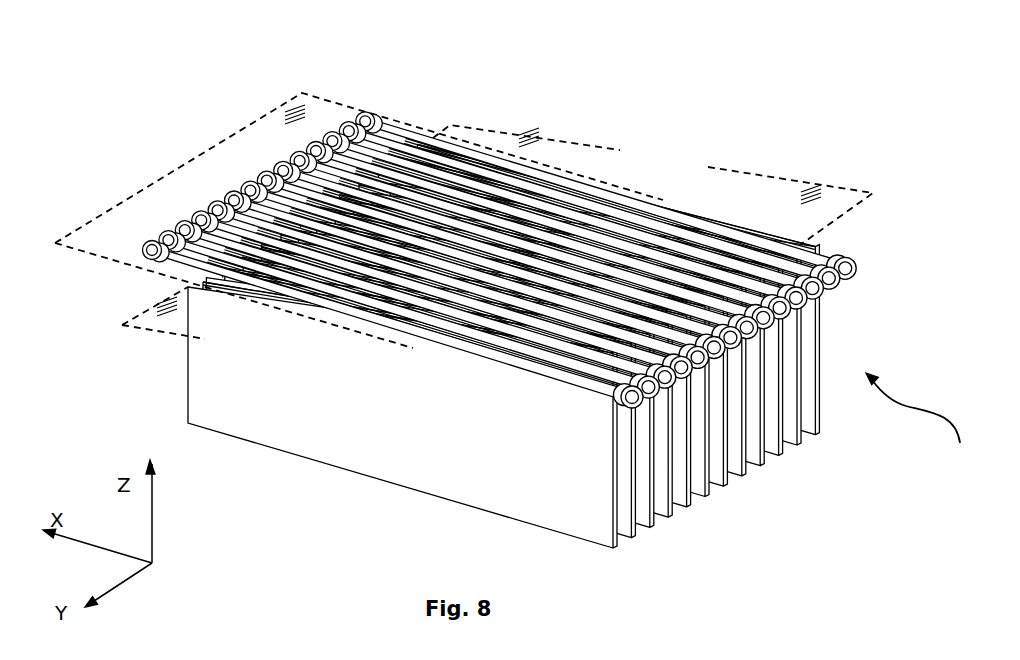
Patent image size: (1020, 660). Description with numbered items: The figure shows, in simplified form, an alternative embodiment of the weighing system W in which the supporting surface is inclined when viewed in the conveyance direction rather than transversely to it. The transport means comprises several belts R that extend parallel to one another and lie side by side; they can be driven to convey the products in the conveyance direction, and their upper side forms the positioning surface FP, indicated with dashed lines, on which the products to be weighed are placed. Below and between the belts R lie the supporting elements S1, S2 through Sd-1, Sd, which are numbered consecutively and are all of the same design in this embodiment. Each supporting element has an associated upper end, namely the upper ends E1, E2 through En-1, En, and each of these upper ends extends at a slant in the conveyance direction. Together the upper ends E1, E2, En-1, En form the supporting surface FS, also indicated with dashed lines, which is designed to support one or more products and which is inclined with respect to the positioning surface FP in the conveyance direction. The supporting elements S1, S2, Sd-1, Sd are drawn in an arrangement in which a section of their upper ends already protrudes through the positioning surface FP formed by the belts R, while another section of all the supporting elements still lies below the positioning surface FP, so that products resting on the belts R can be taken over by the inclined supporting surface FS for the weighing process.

The weighing system W is at (104, 133).
The positioning surface FP is at (293, 110).
The supporting surface FS is at (563, 143).
The belts R is at (378, 144).
The upper end of first supporting element E1 is at (557, 337).
The upper end of second supporting element E2 is at (630, 343).
The upper end of a supporting element En-1 is at (767, 240).
The upper end of a supporting element En is at (782, 237).
The first supporting element S1 is at (422, 465).
The second supporting element S2 is at (622, 507).
The second-to-last supporting element Sd-1 is at (785, 423).
The last supporting element Sd is at (805, 412).